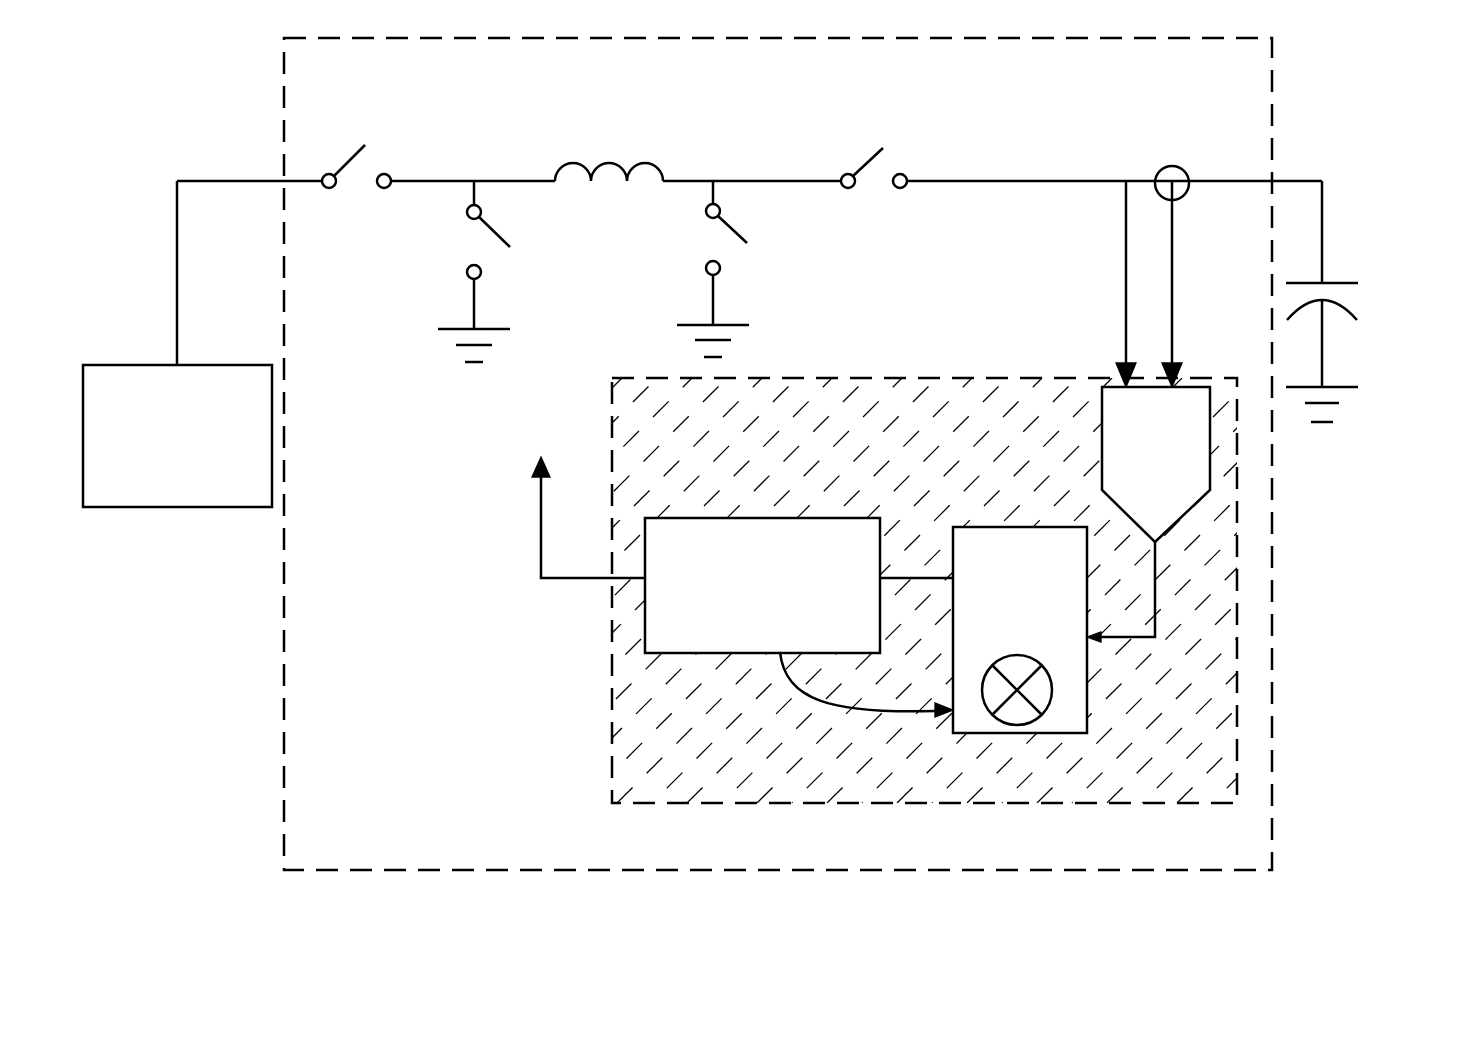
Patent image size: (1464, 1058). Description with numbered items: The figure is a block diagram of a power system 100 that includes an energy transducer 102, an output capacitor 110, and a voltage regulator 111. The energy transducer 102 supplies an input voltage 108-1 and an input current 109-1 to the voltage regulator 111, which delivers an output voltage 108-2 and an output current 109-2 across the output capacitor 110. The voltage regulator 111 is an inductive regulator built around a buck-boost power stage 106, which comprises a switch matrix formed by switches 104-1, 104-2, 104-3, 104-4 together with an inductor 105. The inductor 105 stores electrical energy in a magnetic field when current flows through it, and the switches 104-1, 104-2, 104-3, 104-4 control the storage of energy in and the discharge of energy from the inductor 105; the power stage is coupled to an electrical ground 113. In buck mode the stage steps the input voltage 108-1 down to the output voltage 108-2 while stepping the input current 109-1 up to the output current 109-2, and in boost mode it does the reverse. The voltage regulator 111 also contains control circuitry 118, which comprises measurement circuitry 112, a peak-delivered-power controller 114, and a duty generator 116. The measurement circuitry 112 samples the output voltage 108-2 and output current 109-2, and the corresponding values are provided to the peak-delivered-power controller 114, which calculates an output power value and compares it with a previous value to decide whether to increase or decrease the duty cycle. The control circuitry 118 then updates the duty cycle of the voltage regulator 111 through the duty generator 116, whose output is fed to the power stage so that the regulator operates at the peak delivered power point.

The power system 100 is at (1390, 92).
The energy transducer 102 is at (186, 508).
The switch 104-1 is at (385, 114).
The switch 104-2 is at (893, 124).
The switch 104-3 is at (768, 232).
The switch 104-4 is at (440, 242).
The inductor 105 is at (600, 204).
The buck-boost power stage 106 is at (602, 112).
The input voltage 108-1 is at (150, 113).
The input current 109-1 is at (200, 113).
The output voltage 108-2 is at (1133, 112).
The output current 109-2 is at (1203, 112).
The output capacitor 110 is at (1363, 293).
The voltage regulator 111 is at (1272, 573).
The measurement circuitry 112 is at (1102, 478).
The electrical ground 113 is at (420, 356).
The peak-delivered-power controller 114 is at (1087, 693).
The duty generator 116 is at (825, 518).
The control circuitry 118 is at (1125, 802).